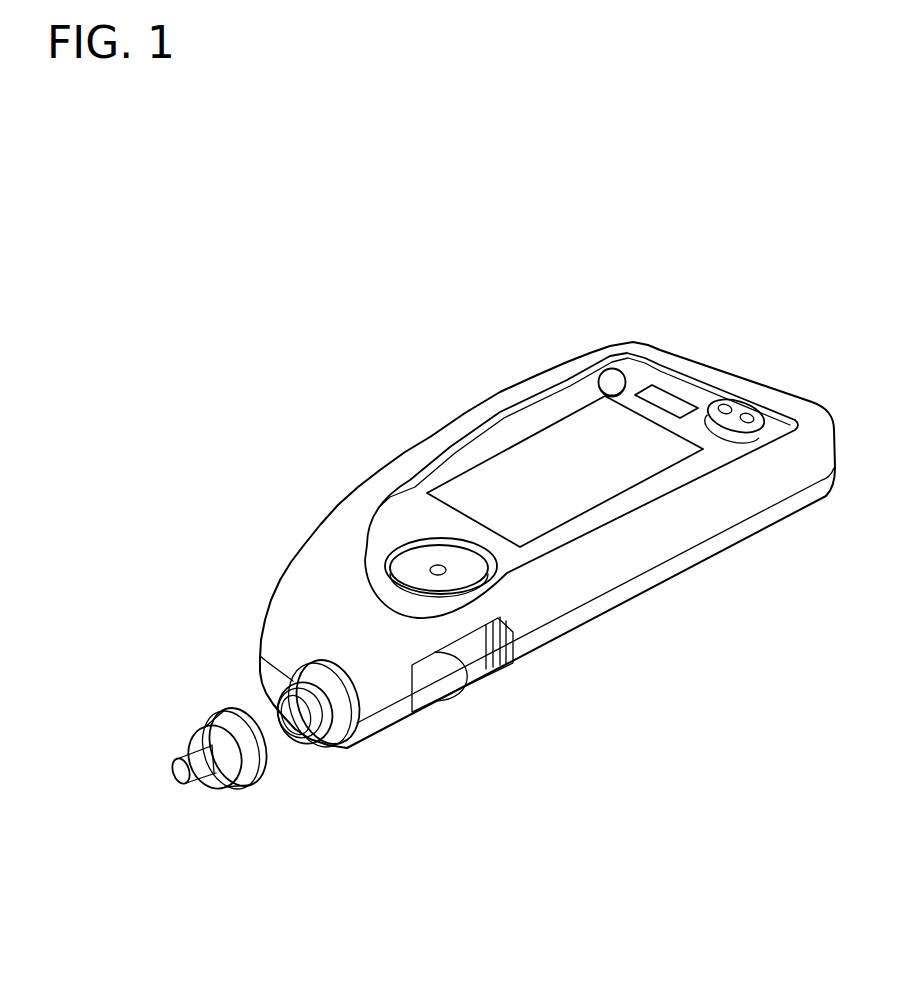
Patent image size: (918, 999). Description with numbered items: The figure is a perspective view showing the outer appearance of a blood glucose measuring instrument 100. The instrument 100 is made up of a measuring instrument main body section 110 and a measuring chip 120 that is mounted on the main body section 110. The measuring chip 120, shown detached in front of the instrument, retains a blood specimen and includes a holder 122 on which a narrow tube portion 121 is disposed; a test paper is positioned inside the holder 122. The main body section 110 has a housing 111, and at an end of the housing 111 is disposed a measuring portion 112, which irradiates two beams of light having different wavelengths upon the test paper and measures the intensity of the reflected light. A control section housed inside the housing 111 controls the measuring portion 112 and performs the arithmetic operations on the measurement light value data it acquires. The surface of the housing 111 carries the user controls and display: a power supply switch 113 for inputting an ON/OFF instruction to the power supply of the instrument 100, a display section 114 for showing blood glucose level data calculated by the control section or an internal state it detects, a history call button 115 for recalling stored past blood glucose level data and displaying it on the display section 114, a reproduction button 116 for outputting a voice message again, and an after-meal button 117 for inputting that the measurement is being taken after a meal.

The blood glucose measuring instrument 100 is at (193, 334).
The measuring instrument main body section 110 is at (704, 614).
The housing 111 is at (367, 497).
The measuring portion 112 is at (295, 721).
The power supply switch 113 is at (466, 568).
The display section 114 is at (543, 452).
The history call button 115 is at (651, 397).
The reproduction button 116 is at (723, 408).
The after-meal button 117 is at (612, 378).
The measuring chip 120 is at (217, 764).
The narrow tube portion 121 is at (203, 770).
The holder 122 is at (237, 768).